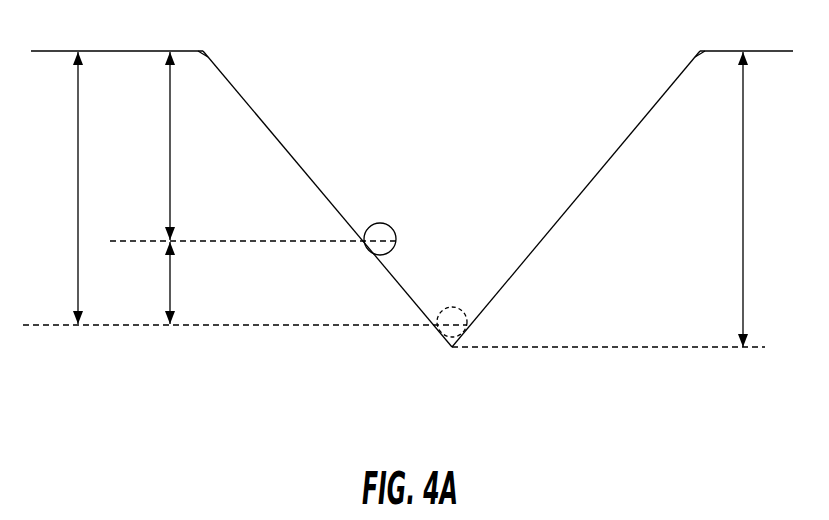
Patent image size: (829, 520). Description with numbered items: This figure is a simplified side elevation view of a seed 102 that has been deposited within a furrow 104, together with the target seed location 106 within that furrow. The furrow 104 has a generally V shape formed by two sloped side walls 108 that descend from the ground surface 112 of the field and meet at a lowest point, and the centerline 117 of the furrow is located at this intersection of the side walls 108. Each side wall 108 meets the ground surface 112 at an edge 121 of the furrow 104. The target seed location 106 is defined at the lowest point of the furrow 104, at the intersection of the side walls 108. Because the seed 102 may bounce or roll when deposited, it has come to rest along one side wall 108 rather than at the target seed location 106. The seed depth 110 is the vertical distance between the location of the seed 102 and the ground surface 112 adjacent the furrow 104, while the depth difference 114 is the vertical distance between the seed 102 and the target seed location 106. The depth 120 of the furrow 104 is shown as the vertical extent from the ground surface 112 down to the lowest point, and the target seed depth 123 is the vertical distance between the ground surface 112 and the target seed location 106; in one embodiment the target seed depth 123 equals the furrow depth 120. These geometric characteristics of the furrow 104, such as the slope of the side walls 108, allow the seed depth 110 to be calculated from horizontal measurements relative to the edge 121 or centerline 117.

The seed 102 is at (388, 224).
The furrow 104 is at (464, 97).
The target seed location 106 is at (455, 307).
The side wall 108 is at (270, 131).
The seed depth 110 is at (169, 146).
The ground surface 112 is at (131, 50).
The depth difference 114 is at (169, 298).
The centerline 117 is at (440, 353).
The depth of the furrow 120 is at (744, 206).
The edge of the furrow 121 is at (207, 48).
The target seed depth 123 is at (77, 186).